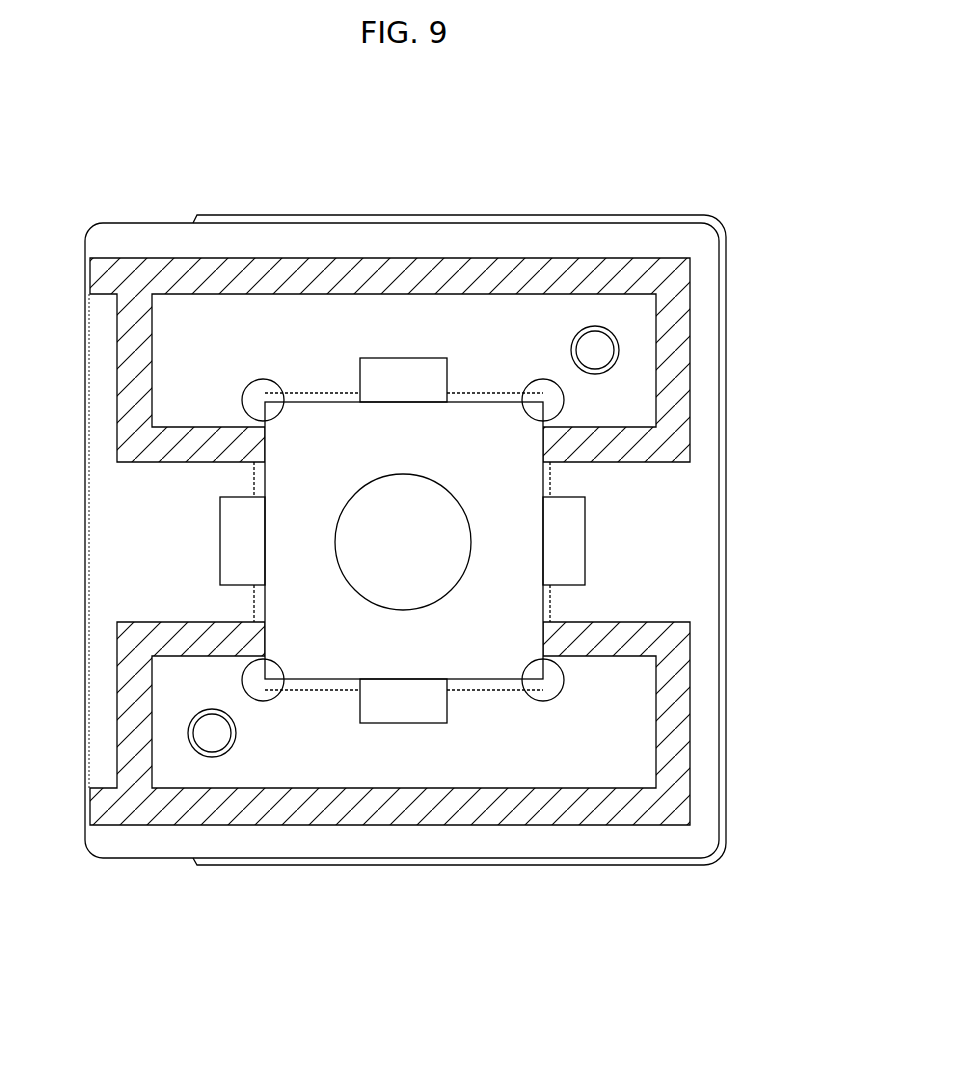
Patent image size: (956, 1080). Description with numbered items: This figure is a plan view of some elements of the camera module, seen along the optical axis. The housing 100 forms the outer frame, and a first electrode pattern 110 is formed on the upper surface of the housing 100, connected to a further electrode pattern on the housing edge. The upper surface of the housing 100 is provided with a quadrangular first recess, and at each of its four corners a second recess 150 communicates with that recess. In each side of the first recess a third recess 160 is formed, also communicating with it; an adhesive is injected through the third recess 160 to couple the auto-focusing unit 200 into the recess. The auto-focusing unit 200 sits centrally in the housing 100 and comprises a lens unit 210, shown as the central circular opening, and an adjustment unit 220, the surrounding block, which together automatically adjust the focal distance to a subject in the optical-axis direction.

The housing 100 is at (116, 198).
The first electrode pattern 110 is at (401, 278).
The second recess 150 is at (262, 395).
The third recess 160 is at (236, 540).
The auto-focusing unit 200 is at (792, 473).
The lens unit 210 is at (427, 543).
The adjustment unit 220 is at (500, 487).